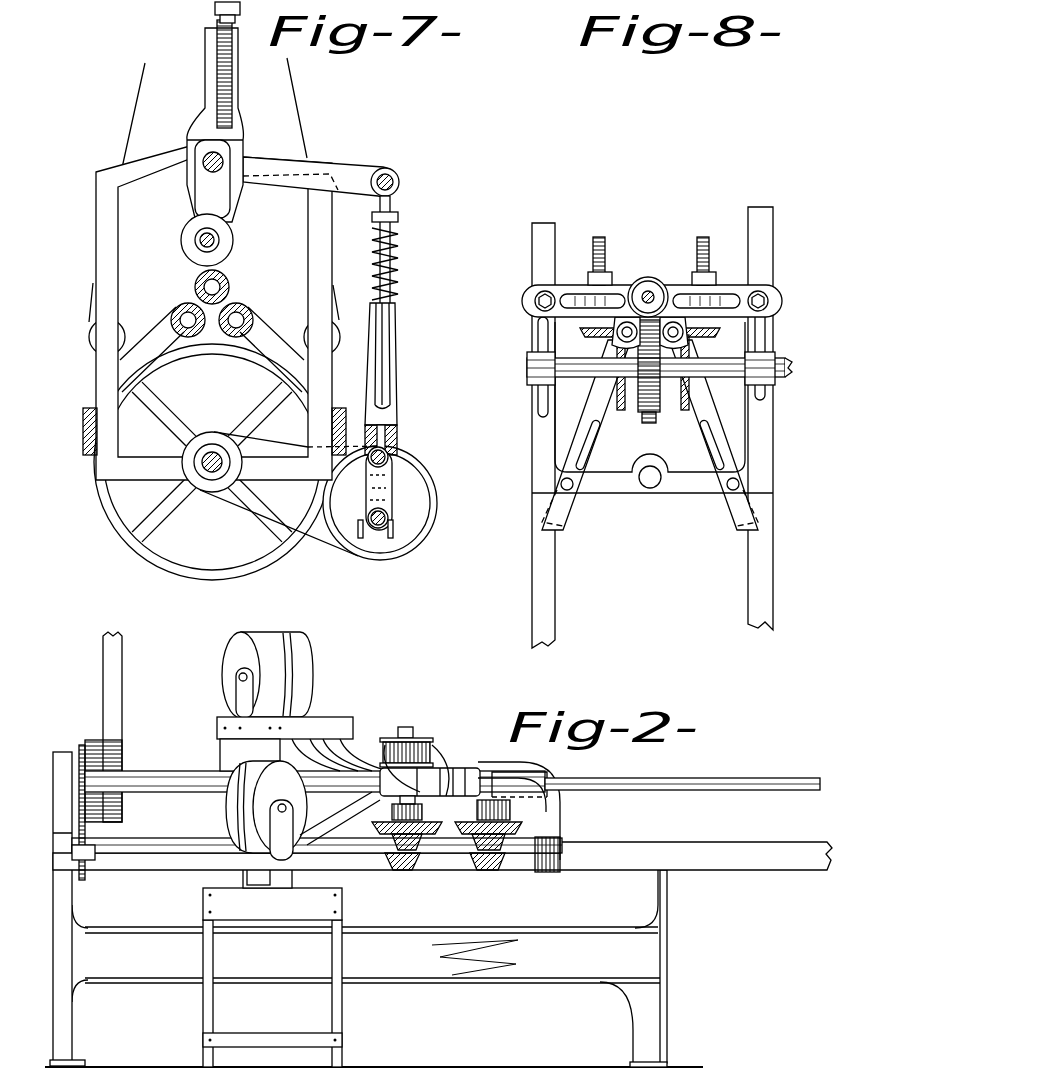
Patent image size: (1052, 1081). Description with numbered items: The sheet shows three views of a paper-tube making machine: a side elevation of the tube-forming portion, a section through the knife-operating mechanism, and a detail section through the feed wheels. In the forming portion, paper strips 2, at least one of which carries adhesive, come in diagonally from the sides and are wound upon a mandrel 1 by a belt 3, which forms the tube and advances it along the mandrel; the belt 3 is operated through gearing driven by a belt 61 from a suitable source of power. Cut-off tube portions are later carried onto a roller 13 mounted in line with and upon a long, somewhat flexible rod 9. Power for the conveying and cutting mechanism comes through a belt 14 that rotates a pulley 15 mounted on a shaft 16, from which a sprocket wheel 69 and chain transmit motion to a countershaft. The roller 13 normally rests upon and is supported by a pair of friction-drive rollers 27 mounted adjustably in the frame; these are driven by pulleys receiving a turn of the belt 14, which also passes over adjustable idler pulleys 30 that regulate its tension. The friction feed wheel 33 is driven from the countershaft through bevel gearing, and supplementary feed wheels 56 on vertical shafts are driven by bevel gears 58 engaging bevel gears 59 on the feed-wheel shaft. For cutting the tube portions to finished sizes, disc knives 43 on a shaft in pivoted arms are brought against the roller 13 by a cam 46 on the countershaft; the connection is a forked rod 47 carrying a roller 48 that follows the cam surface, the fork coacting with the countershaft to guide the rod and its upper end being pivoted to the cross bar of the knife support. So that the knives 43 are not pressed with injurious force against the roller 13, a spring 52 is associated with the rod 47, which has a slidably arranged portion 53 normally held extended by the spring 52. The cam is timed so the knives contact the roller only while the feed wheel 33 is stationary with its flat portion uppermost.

In FIG. 2, the mandrel 1 is at (192, 768).
In FIG. 2, the paper strips 2 is at (335, 717).
In FIG. 2, the belt 3 is at (432, 752).
In FIG. 2, the rod 9 is at (700, 778).
In FIG. 7, the roller 13 is at (230, 277).
In FIG. 8, the roller 13 is at (652, 287).
In FIG. 7, the belt 14 is at (300, 110).
In FIG. 7, the pulley 15 is at (257, 563).
In FIG. 7, the shaft 16 is at (212, 445).
In FIG. 7, the friction-drive rollers 27 is at (178, 302).
In FIG. 8, the friction-drive rollers 27 is at (623, 292).
In FIG. 7, the idler pulleys 30 is at (85, 340).
In FIG. 8, the friction feed wheel 33 is at (645, 425).
In FIG. 7, the disc knives 43 is at (225, 247).
In FIG. 7, the cam 46 is at (405, 493).
In FIG. 7, the forked rod 47 is at (393, 412).
In FIG. 7, the roller 48 is at (388, 457).
In FIG. 7, the spring 52 is at (393, 278).
In FIG. 7, the slidably arranged portion 53 is at (393, 202).
In FIG. 8, the supplementary feed wheels 56 is at (577, 297).
In FIG. 8, the bevel gears 58 is at (692, 342).
In FIG. 8, the bevel gears 59 is at (610, 387).
In FIG. 2, the belt 61 is at (115, 672).
In FIG. 7, the sprocket wheel 69 is at (200, 486).